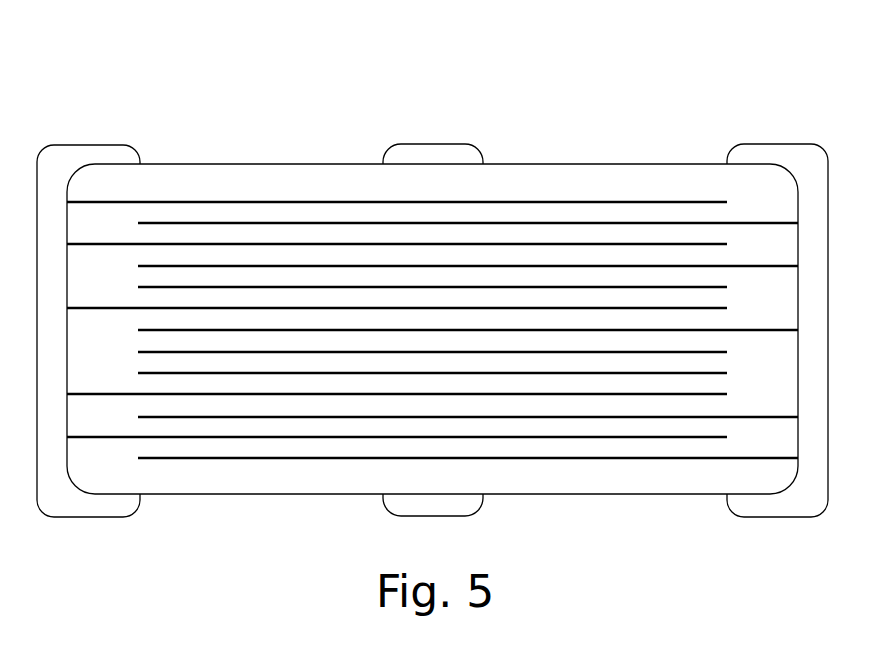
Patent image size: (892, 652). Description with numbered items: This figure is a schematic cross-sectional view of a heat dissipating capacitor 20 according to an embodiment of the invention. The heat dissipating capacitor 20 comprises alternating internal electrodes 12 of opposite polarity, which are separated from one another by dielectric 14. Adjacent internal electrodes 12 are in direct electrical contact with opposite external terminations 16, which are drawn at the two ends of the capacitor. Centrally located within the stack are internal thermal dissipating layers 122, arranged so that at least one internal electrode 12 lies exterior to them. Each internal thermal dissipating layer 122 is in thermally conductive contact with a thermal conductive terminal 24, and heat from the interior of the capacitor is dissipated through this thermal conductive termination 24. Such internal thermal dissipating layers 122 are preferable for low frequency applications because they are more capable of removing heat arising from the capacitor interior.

The internal electrodes 12 is at (593, 243).
The dielectric 14 is at (776, 379).
The external terminations 16 is at (814, 182).
The heat dissipating capacitor 20 is at (443, 311).
The thermal conductive terminal 24 is at (447, 155).
The internal thermal dissipating layer 122 is at (241, 372).